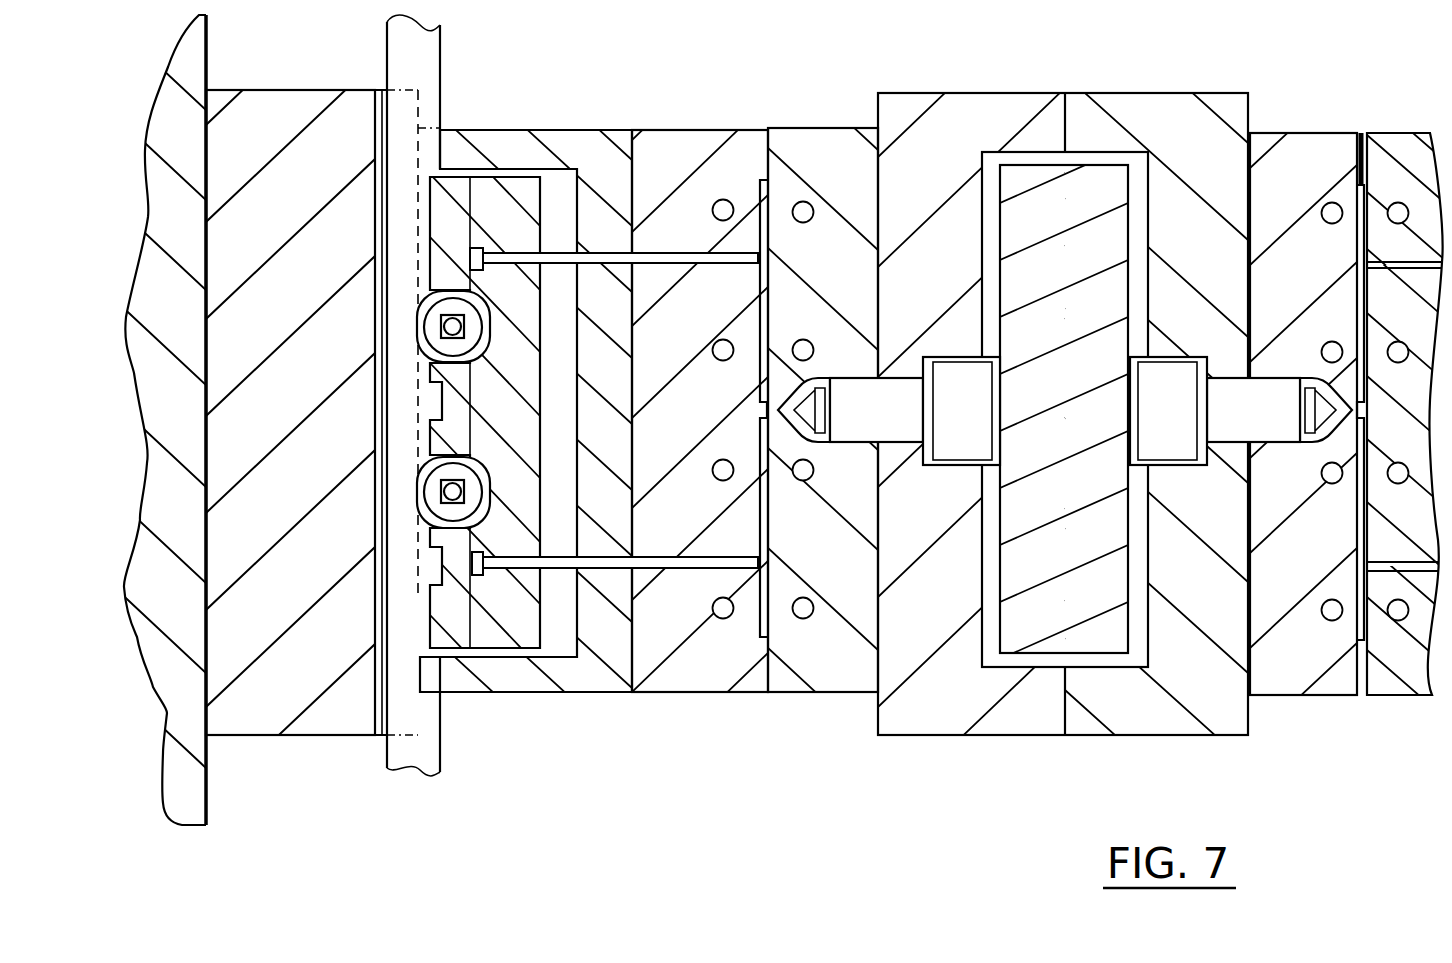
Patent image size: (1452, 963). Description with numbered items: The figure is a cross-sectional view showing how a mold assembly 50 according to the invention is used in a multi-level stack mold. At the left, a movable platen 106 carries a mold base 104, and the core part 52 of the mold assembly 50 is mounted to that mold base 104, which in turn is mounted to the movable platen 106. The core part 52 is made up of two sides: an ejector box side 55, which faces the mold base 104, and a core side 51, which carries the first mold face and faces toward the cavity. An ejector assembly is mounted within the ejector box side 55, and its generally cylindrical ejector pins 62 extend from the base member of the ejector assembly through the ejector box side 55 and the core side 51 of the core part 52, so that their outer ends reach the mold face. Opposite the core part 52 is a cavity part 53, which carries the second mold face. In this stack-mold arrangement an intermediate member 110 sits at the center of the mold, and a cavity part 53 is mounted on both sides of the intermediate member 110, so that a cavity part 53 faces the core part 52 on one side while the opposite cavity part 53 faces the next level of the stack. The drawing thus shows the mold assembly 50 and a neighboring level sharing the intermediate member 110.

The mold assembly 50 is at (648, 443).
The core side 51 is at (703, 145).
The core part 52 is at (592, 443).
The cavity part 53 is at (825, 148).
The ejector box side 55 is at (530, 143).
The ejector pins 62 is at (556, 258).
The mold base 104 is at (305, 683).
The movable platen 106 is at (190, 788).
The intermediate member 110 is at (1005, 705).